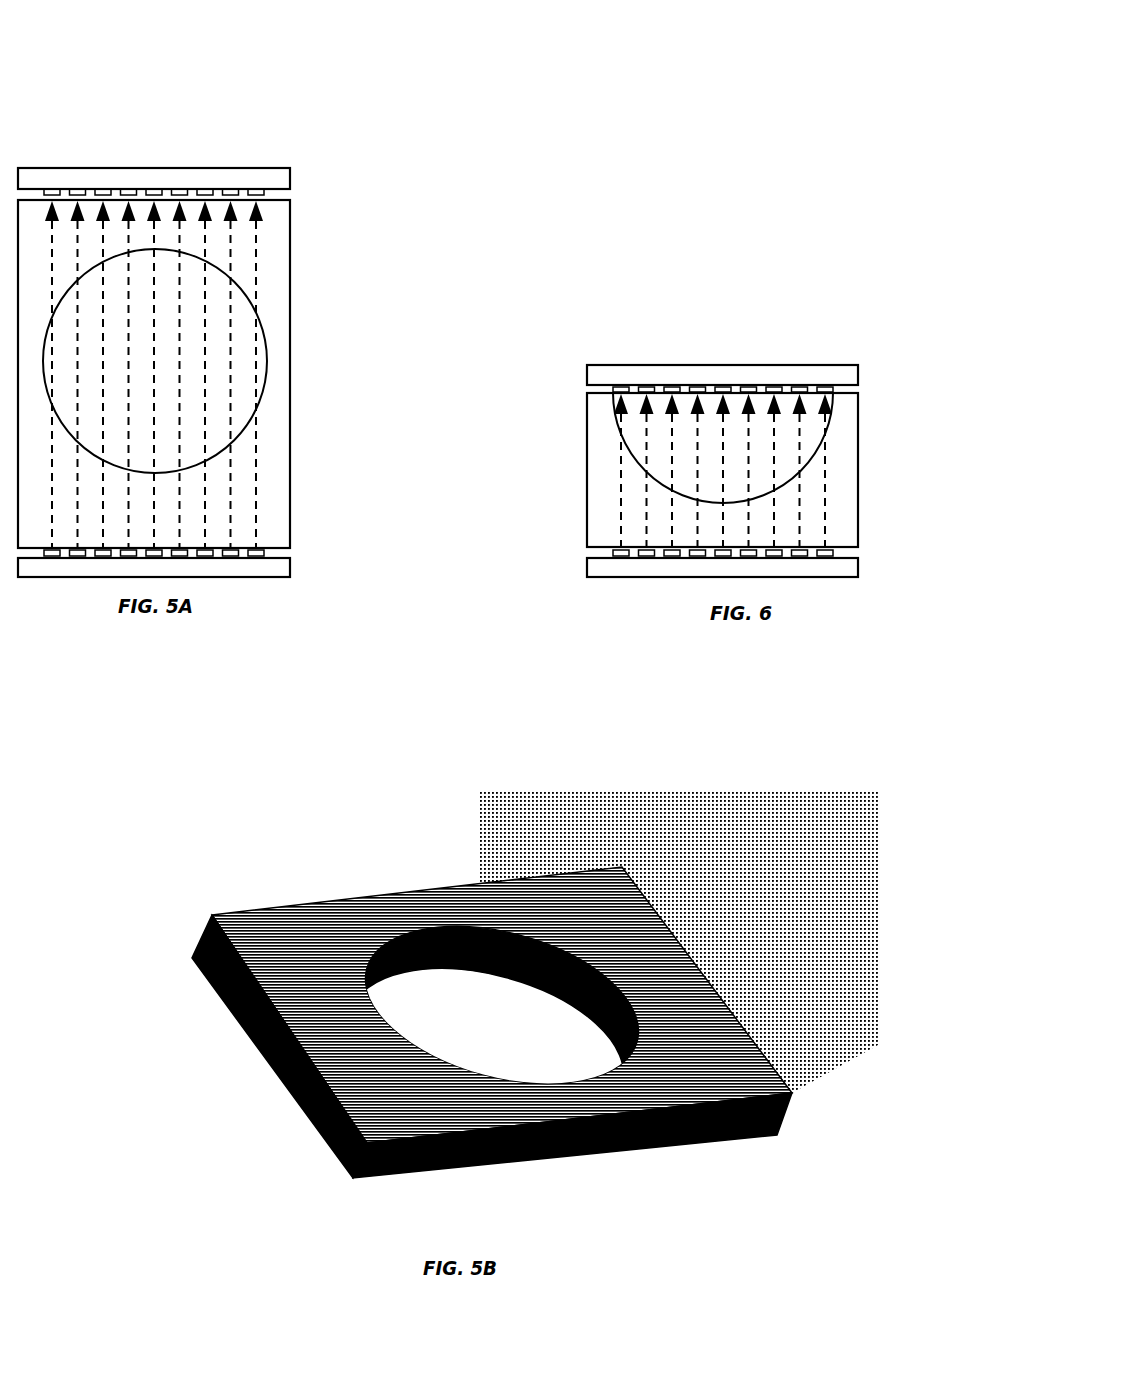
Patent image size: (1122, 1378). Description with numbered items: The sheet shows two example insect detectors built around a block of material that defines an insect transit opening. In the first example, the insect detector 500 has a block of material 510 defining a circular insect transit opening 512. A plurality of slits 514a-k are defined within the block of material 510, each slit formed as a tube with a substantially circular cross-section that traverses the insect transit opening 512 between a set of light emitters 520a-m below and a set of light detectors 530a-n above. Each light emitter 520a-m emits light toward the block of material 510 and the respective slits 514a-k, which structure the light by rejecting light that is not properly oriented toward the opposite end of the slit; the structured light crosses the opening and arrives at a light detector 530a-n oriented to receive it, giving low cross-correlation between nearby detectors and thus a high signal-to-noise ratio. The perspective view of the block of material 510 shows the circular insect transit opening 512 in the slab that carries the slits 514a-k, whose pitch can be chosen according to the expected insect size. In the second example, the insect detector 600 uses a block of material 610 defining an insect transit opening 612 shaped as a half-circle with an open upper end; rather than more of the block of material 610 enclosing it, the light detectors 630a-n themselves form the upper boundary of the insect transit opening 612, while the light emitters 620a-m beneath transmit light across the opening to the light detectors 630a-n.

In FIG. 5A, the insect detector 500 is at (125, 87).
In FIG. 5A, the light detectors 530a-n is at (319, 190).
In FIG. 5A, the block of material 510 is at (292, 265).
In FIG. 5B, the block of material 510 is at (413, 1022).
In FIG. 5A, the insect transit opening 512 is at (298, 367).
In FIG. 5B, the insect transit opening 512 is at (494, 1069).
In FIG. 5A, the light emitters 520a-m is at (301, 567).
In FIG. 5B, the slits 514a-k is at (209, 1055).
In FIG. 6, the insect detector 600 is at (762, 285).
In FIG. 6, the light detectors 630a-n is at (569, 390).
In FIG. 6, the block of material 610 is at (872, 520).
In FIG. 6, the insect transit opening 612 is at (632, 460).
In FIG. 6, the light emitters 620a-m is at (569, 560).